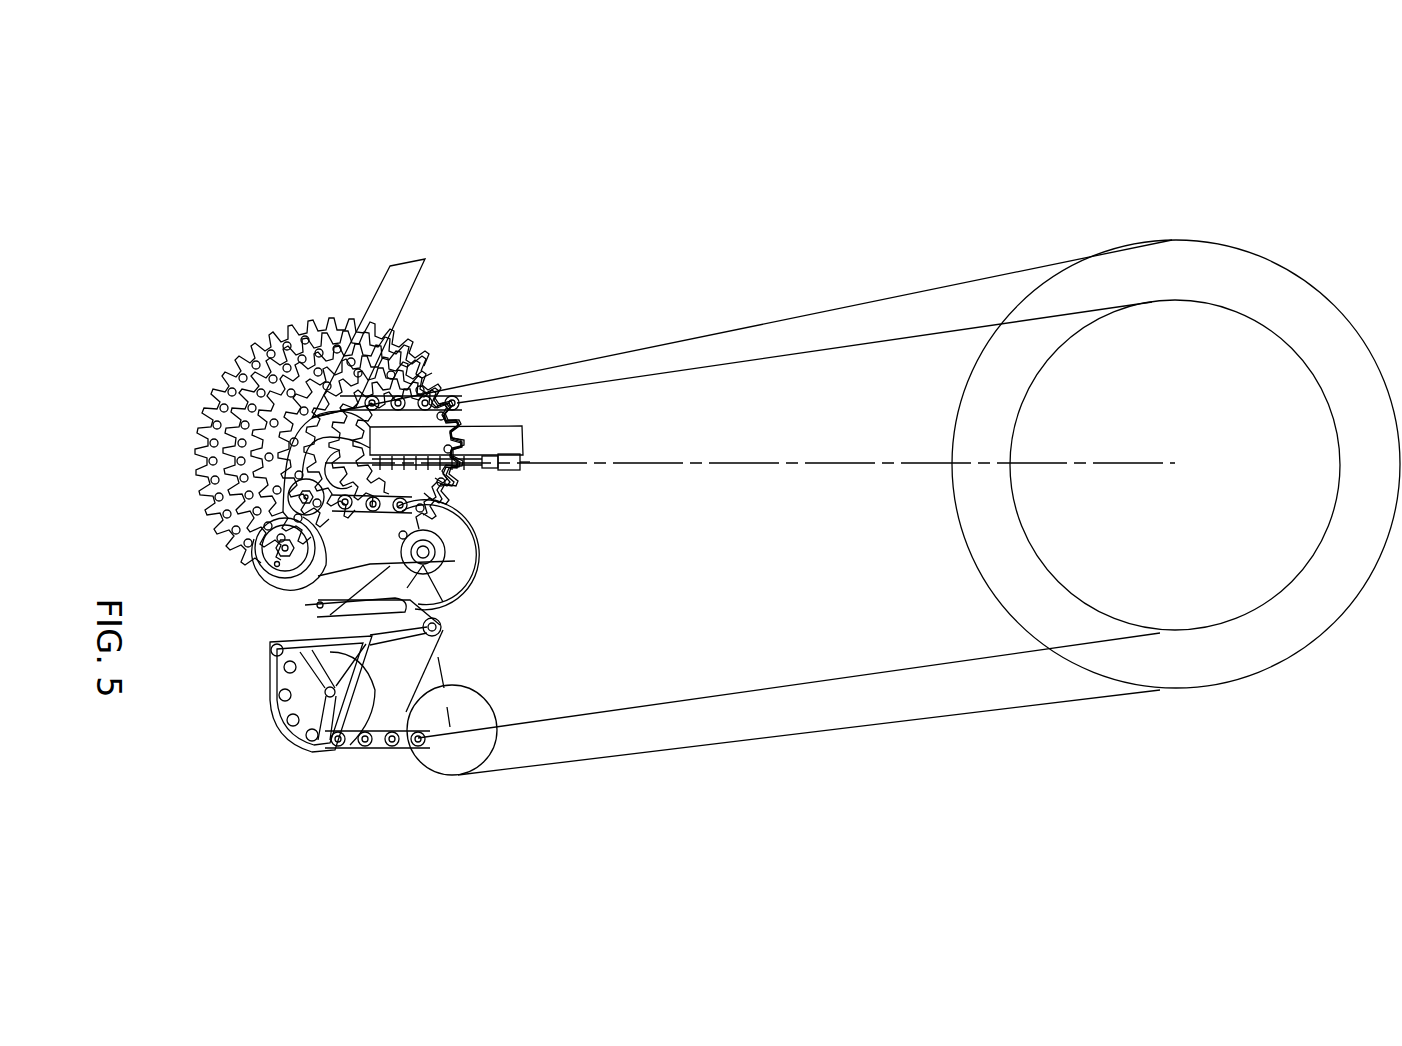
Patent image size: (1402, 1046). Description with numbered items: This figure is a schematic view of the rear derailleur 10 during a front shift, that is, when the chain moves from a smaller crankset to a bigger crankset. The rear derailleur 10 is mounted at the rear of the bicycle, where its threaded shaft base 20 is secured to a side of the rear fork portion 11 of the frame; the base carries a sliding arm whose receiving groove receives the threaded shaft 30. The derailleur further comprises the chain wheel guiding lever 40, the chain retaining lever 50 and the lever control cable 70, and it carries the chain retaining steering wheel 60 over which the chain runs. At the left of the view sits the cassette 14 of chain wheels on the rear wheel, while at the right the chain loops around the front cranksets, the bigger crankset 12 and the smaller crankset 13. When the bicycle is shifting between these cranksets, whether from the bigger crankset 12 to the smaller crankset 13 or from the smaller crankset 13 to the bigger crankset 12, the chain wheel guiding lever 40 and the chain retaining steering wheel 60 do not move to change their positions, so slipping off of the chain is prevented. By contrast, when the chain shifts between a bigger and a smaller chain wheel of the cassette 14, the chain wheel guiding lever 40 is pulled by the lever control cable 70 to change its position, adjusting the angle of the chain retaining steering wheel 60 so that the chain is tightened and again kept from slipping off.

The rear derailleur 10 is at (245, 583).
The rear fork portion 11 is at (255, 428).
The bigger crankset 12 is at (1298, 273).
The smaller crankset 13 is at (1228, 303).
The cassette 14 is at (290, 332).
The threaded shaft base 20 is at (257, 562).
The threaded shaft 30 is at (257, 545).
The chain wheel guiding lever 40 is at (268, 650).
The chain retaining lever 50 is at (465, 548).
The chain retaining steering wheel 60 is at (462, 498).
The lever control cable 70 is at (438, 636).